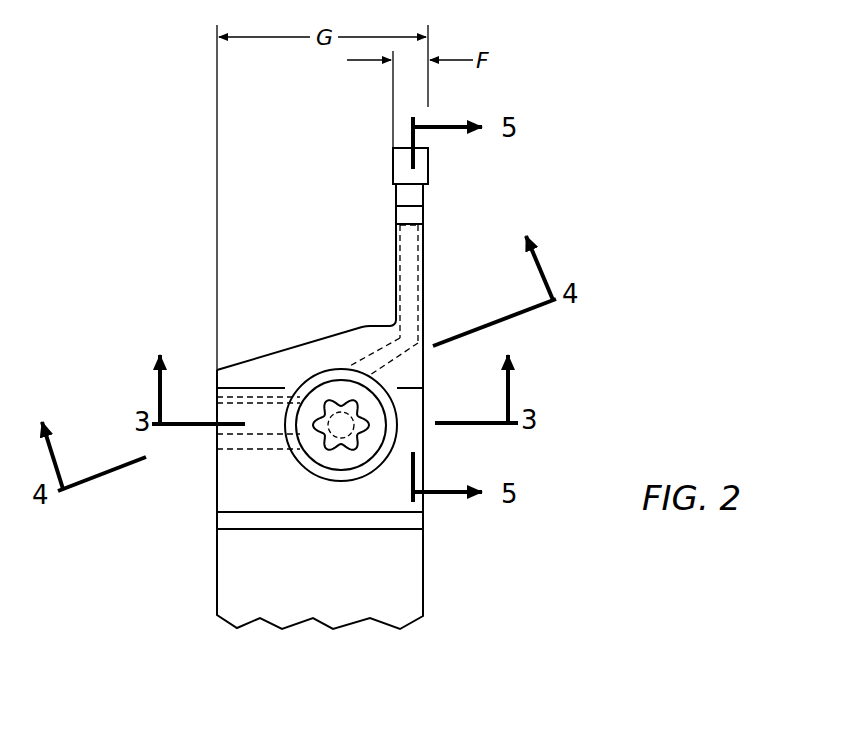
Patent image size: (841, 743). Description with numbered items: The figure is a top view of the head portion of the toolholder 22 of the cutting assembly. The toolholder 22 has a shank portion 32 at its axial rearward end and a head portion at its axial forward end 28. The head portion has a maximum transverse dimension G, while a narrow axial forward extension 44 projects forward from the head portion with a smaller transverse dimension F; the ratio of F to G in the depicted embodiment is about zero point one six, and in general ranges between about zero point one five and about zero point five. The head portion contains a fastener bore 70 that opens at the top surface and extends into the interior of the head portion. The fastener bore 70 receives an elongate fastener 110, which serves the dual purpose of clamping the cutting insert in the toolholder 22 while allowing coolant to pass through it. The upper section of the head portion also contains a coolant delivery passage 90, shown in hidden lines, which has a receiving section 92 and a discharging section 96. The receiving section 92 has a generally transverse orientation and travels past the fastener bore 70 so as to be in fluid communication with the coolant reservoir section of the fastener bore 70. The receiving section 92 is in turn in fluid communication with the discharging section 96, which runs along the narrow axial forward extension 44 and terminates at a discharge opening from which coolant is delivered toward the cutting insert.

The toolholder 22 is at (407, 591).
The shank portion 32 is at (238, 587).
The axial forward end 28 is at (393, 148).
The narrow axial forward extension 44 is at (378, 243).
The discharging section 96 is at (410, 262).
The coolant delivery passage 90 is at (378, 352).
The receiving section 92 is at (398, 338).
The fastener bore 70 is at (343, 477).
The elongate fastener 110 is at (367, 433).